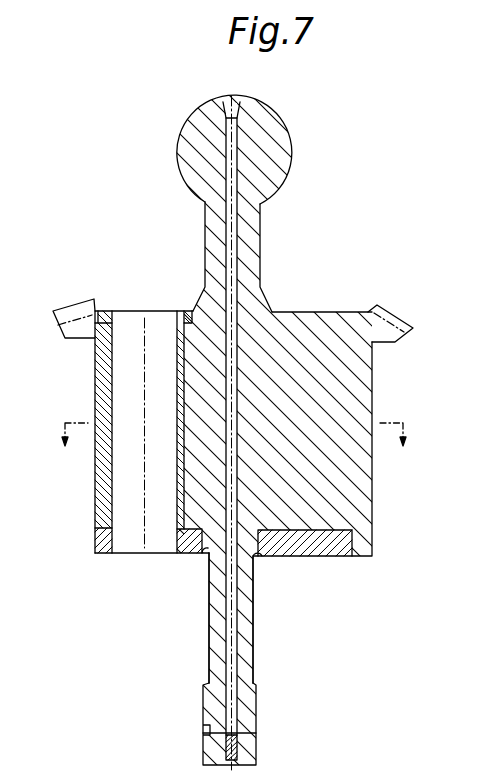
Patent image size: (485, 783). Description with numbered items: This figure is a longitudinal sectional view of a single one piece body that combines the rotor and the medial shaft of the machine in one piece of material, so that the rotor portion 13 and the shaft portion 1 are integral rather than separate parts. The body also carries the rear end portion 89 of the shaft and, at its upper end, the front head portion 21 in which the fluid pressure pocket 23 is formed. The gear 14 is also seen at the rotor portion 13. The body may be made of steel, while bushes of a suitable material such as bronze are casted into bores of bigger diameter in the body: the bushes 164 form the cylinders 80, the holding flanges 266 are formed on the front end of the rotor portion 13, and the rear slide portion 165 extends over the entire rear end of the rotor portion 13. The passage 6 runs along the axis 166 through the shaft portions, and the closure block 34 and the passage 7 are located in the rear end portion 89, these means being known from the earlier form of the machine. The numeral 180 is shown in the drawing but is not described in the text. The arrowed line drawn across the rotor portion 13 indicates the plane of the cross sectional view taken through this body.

The shaft portion 1 is at (258, 240).
The passage 6 is at (230, 592).
The passage 7 is at (245, 732).
The rotor portion 13 is at (322, 325).
The gear 14 is at (70, 312).
The front head portion 21 is at (268, 155).
The fluid pressure pocket 23 is at (226, 106).
The closure block 34 is at (225, 758).
The cylinder 80 is at (132, 318).
The rear end portion 89 is at (208, 708).
The bush 164 is at (103, 372).
The rear slide portion 165 is at (100, 540).
The axis 166 is at (238, 262).
The bottom wall 180 is at (122, 548).
The holding flange 266 is at (115, 310).